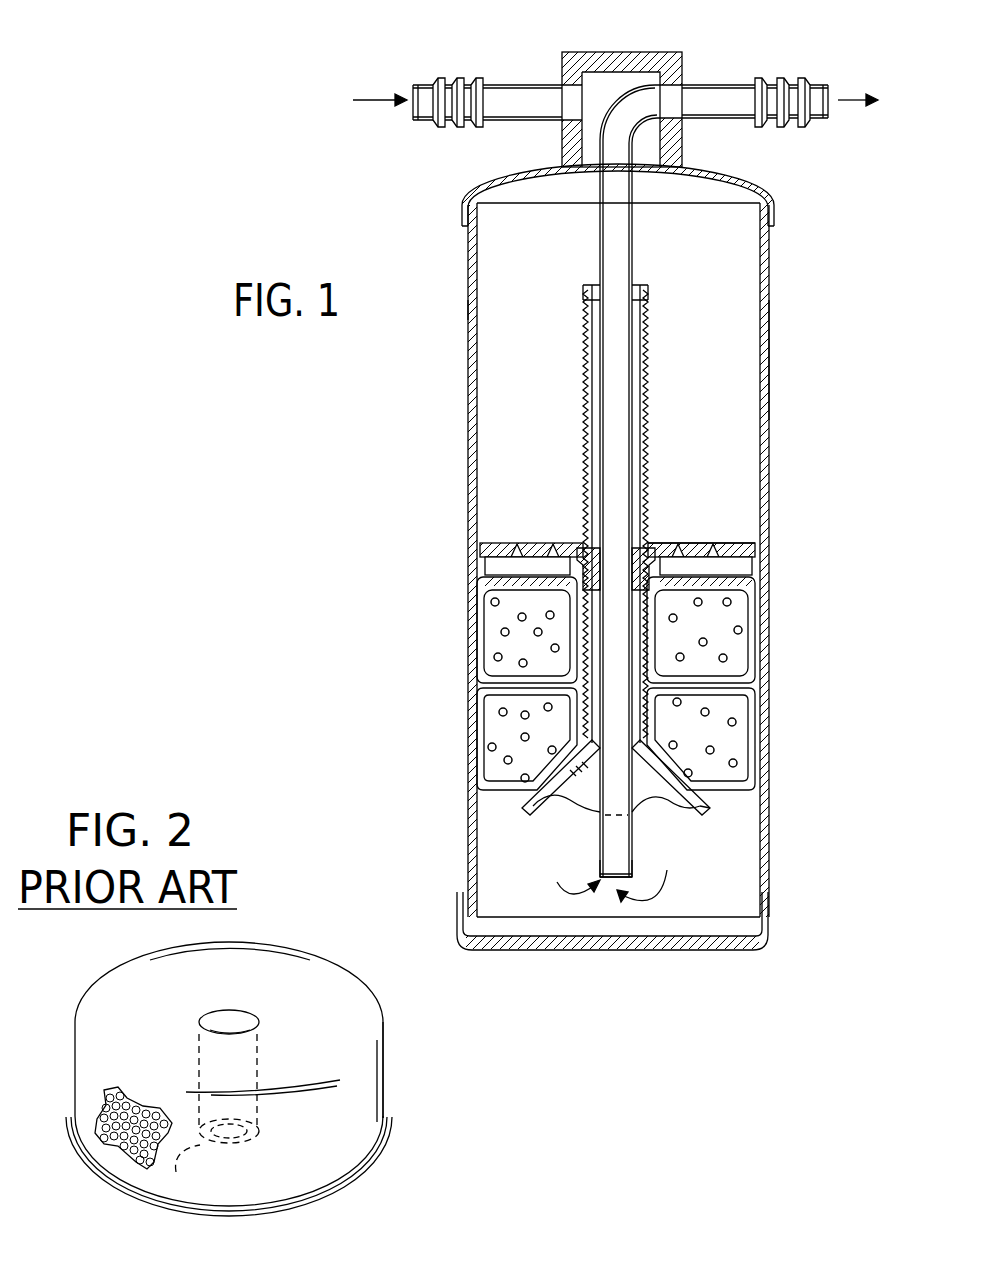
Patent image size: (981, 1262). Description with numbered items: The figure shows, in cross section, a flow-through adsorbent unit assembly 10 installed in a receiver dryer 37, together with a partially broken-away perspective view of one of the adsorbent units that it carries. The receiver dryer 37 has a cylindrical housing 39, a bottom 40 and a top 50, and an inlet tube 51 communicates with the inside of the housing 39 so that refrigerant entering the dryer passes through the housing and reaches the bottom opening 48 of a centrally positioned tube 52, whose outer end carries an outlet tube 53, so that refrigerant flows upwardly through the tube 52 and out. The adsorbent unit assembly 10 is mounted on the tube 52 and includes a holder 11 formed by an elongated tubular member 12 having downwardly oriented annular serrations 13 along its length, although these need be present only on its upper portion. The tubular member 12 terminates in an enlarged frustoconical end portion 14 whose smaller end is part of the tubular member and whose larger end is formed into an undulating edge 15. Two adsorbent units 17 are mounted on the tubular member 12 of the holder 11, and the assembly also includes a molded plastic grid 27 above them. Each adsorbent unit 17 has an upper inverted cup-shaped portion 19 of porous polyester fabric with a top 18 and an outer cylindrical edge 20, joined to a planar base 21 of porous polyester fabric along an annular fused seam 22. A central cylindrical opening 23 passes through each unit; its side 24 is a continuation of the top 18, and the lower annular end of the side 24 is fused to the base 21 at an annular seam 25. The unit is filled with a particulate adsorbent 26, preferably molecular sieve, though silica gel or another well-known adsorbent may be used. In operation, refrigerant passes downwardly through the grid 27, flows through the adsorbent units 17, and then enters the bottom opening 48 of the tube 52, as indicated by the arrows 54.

In FIG. 1, the adsorbent unit assembly 10 is at (672, 494).
In FIG. 1, the holder 11 is at (650, 346).
In FIG. 1, the elongated tubular member 12 is at (648, 405).
In FIG. 1, the annular serrations 13 is at (585, 380).
In FIG. 1, the frustoconical end portion 14 is at (757, 813).
In FIG. 1, the undulating edge 15 is at (700, 812).
In FIG. 1, the adsorbent unit 17 is at (485, 600).
In FIG. 2, the adsorbent unit 17 is at (330, 964).
In FIG. 2, the top 18 is at (240, 958).
In FIG. 2, the upper inverted cup-shaped portion 19 is at (355, 1010).
In FIG. 2, the outer cylindrical edge 20 is at (385, 1083).
In FIG. 1, the planar base 21 is at (500, 540).
In FIG. 2, the planar base 21 is at (280, 1215).
In FIG. 1, the annular fused seam 22 is at (755, 585).
In FIG. 2, the annular fused seam 22 is at (380, 1156).
In FIG. 2, the central cylindrical opening 23 is at (218, 1018).
In FIG. 2, the side 24 is at (243, 1018).
In FIG. 2, the annular seam 25 is at (218, 1155).
In FIG. 2, the particulate adsorbent 26 is at (100, 1100).
In FIG. 1, the molded plastic grid 27 is at (745, 540).
In FIG. 1, the receiver dryer 37 is at (770, 283).
In FIG. 1, the cylindrical housing 39 is at (770, 365).
In FIG. 1, the bottom 40 is at (655, 950).
In FIG. 1, the opening 48 is at (631, 878).
In FIG. 1, the top 50 is at (730, 170).
In FIG. 1, the inlet tube 51 is at (515, 84).
In FIG. 1, the centrally positioned tube 52 is at (600, 248).
In FIG. 1, the outlet tube 53 is at (704, 82).
In FIG. 1, the arrows 54 is at (562, 888).